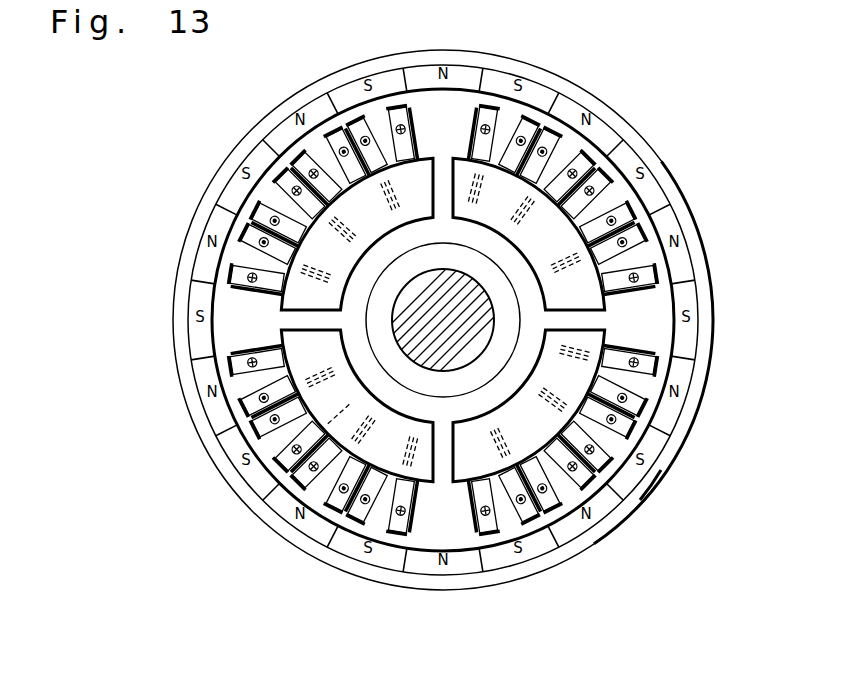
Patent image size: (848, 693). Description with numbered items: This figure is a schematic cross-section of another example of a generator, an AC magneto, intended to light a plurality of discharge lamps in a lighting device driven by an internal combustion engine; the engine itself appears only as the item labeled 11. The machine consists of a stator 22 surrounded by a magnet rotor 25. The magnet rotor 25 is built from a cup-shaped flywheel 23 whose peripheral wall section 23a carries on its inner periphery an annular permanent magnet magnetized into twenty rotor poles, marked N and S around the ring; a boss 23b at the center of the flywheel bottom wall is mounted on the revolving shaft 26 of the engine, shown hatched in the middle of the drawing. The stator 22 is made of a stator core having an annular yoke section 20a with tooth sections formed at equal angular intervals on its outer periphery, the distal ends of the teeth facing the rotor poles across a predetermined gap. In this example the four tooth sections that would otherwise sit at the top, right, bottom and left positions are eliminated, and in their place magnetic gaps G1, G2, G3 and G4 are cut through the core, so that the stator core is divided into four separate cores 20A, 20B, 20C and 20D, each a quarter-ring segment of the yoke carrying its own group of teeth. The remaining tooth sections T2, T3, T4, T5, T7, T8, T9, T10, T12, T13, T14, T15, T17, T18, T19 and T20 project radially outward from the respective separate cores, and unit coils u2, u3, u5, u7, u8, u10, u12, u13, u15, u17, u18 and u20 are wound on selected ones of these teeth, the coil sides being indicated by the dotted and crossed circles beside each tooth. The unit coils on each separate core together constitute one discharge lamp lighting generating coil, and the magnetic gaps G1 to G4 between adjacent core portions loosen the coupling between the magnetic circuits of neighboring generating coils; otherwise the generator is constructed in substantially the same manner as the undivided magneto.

The motor 11 is at (667, 66).
The stator 22 is at (643, 311).
The flywheel 23 is at (712, 415).
The peripheral wall section 23a is at (668, 462).
The boss 23b is at (423, 385).
The magnet rotor 25 is at (701, 195).
The revolving shaft 26 is at (343, 413).
The separate core 20A is at (580, 198).
The separate core 20B is at (600, 492).
The separate core 20C is at (262, 462).
The separate core 20D is at (310, 150).
The annular yoke section 20a is at (377, 455).
The magnetic gap G1 is at (447, 200).
The magnetic gap G2 is at (557, 328).
The magnetic gap G3 is at (447, 445).
The magnetic gap G4 is at (300, 321).
The tooth section T2 is at (532, 110).
The tooth section T3 is at (600, 158).
The tooth section T4 is at (640, 208).
The tooth section T5 is at (660, 252).
The tooth section T7 is at (636, 382).
The tooth section T8 is at (633, 479).
The tooth section T9 is at (578, 514).
The tooth section T10 is at (512, 552).
The tooth section T12 is at (350, 527).
The tooth section T13 is at (300, 492).
The tooth section T14 is at (250, 442).
The tooth section T15 is at (238, 356).
The tooth section T17 is at (240, 228).
The tooth section T18 is at (280, 165).
The tooth section T19 is at (340, 118).
The tooth section T20 is at (400, 96).
The unit coil u2 is at (486, 104).
The unit coil u3 is at (548, 142).
The unit coil u5 is at (648, 282).
The unit coil u7 is at (642, 362).
The unit coil u8 is at (650, 422).
The unit coil u10 is at (548, 505).
The unit coil u12 is at (402, 525).
The unit coil u13 is at (332, 512).
The unit coil u15 is at (236, 362).
The unit coil u17 is at (240, 280).
The unit coil u18 is at (272, 222).
The unit coil u20 is at (400, 100).